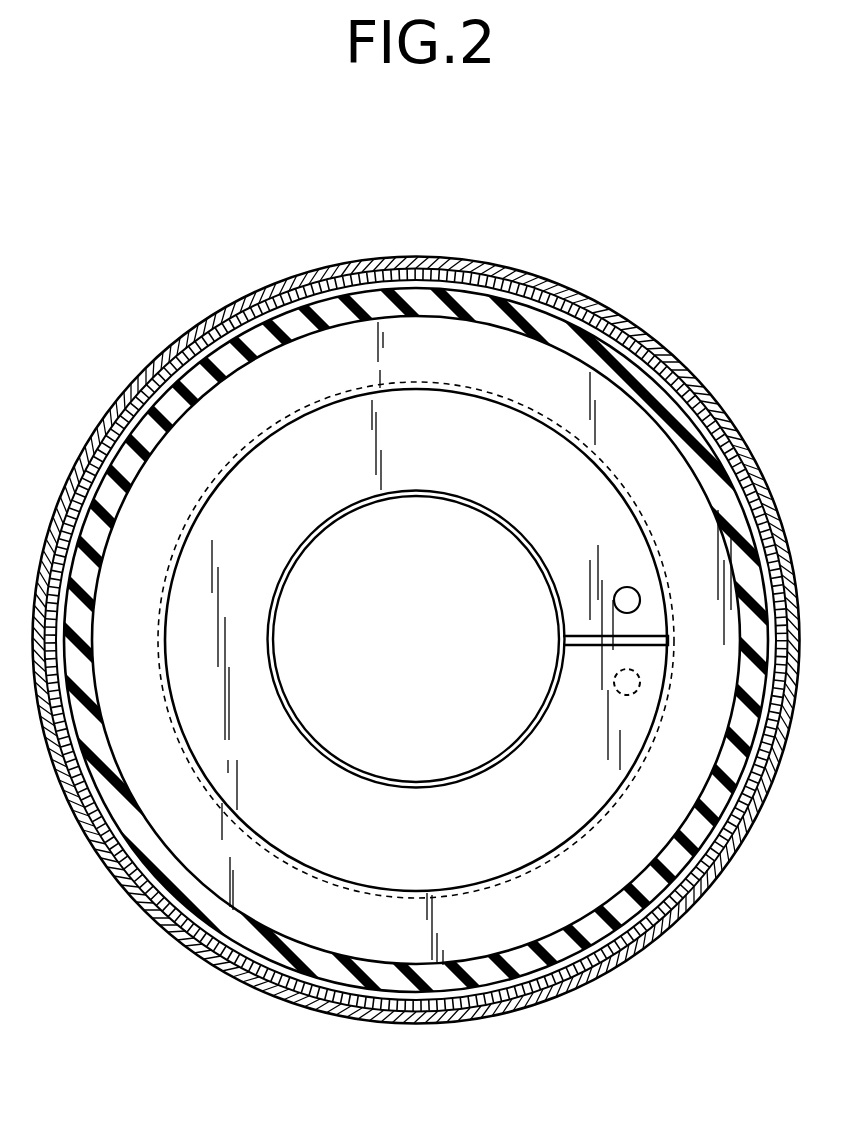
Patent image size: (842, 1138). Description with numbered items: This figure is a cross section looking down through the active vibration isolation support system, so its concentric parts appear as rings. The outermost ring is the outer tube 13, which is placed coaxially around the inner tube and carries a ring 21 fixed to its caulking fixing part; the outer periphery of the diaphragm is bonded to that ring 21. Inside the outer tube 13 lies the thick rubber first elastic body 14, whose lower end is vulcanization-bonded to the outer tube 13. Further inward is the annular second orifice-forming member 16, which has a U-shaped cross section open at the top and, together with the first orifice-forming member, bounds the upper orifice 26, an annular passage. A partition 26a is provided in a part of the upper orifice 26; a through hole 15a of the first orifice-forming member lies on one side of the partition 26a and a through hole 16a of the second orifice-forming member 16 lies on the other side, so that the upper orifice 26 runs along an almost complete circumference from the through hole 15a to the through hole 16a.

The outer tube 13 is at (633, 332).
The ring 21 is at (215, 340).
The first elastic body 14 is at (423, 298).
The upper orifice 26 is at (500, 472).
The second orifice-forming member 16 is at (341, 517).
The through hole 16a is at (612, 596).
The through hole 15a is at (608, 695).
The partition 26a is at (587, 645).